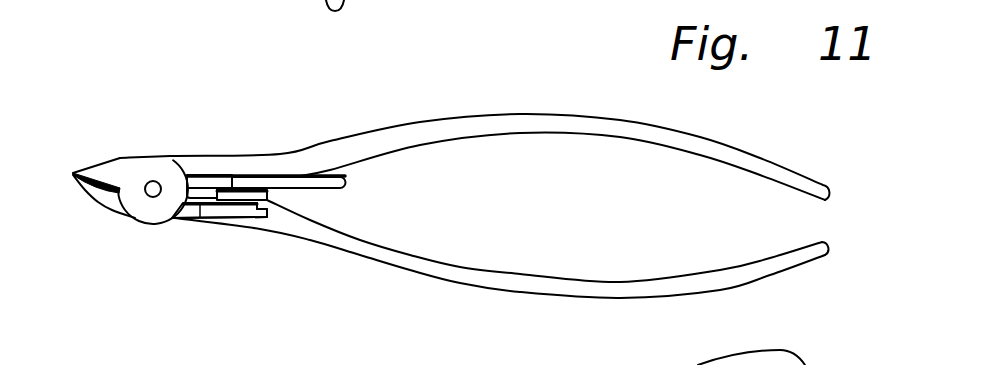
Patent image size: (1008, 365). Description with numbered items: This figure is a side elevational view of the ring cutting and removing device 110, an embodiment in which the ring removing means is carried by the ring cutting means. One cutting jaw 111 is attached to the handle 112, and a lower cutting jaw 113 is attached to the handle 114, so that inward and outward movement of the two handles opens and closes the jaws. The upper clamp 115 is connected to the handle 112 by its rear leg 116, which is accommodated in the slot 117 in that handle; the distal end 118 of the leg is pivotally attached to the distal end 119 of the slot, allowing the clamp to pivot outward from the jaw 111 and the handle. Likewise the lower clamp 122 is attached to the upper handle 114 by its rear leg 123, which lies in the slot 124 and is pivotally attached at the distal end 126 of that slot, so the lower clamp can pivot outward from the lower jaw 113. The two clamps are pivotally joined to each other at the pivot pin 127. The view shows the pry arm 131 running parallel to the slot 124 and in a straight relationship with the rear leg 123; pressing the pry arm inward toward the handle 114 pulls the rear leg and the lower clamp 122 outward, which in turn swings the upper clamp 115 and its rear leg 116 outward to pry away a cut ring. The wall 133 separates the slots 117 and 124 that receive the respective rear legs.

The ring cutting and removing device 110 is at (467, 65).
The cutting jaw 111 is at (106, 161).
The handle 112 is at (725, 284).
The lower cutting jaw 113 is at (100, 207).
The handle 114 is at (732, 156).
The upper clamp 115 is at (144, 158).
The rear leg 116 is at (223, 204).
The slot 117 is at (230, 225).
The distal end 118 is at (268, 212).
The distal end 119 is at (268, 196).
The lower clamp 122 is at (114, 207).
The rear leg 123 is at (185, 166).
The slot 124 is at (243, 176).
The distal end 126 is at (277, 163).
The pivot pin 127 is at (153, 181).
The pry arm 131 is at (348, 185).
The wall 133 is at (200, 206).